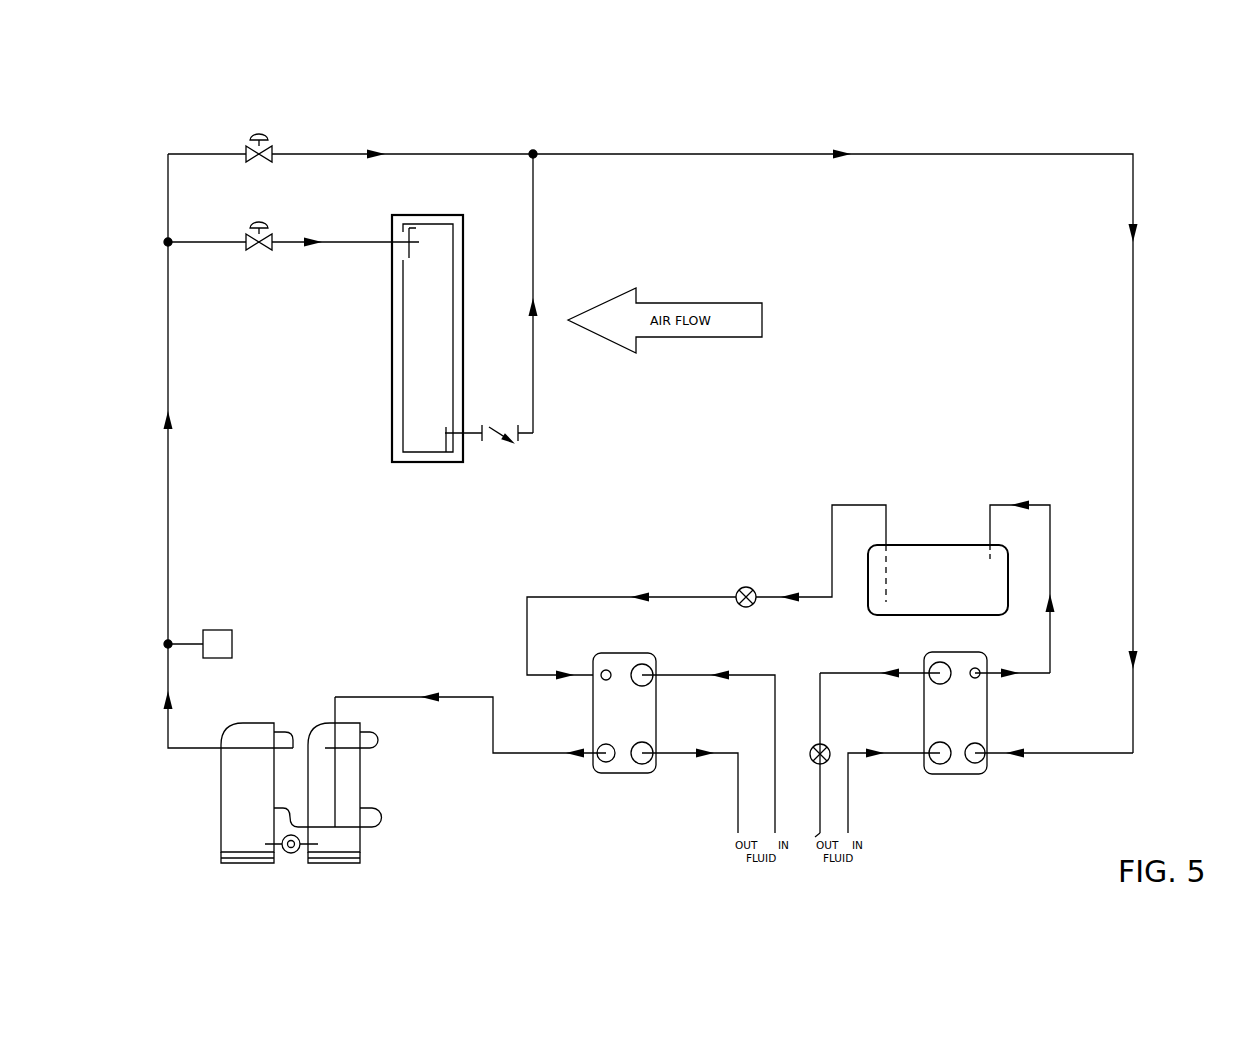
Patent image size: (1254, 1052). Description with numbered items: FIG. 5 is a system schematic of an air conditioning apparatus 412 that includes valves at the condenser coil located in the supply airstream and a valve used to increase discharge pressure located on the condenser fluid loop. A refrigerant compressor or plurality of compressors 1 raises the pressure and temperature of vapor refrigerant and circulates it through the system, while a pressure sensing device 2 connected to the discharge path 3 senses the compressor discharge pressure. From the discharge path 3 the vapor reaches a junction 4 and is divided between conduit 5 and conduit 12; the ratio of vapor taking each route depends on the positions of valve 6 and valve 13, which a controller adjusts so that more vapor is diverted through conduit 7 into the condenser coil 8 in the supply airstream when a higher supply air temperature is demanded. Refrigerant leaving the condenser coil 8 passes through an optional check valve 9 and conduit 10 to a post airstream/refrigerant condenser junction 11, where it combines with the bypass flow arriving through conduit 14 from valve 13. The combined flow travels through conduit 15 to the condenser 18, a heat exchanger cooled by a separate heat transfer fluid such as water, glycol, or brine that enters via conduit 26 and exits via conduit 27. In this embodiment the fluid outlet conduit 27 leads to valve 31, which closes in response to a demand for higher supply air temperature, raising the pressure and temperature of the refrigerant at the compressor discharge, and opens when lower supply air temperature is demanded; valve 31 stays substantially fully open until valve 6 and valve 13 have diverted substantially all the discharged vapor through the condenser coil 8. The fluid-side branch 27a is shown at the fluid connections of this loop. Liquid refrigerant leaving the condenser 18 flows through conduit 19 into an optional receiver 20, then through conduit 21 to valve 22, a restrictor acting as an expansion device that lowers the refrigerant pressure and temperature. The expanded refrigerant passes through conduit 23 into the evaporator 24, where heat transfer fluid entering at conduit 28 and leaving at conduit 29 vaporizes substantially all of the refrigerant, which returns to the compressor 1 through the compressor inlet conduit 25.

The apparatus 412 is at (1160, 102).
The compressor 1 is at (243, 714).
The pressure sensing device 2 is at (223, 623).
The discharge path 3 is at (178, 377).
The junction 4 is at (158, 233).
The conduit 5 is at (200, 233).
The valve 6 is at (287, 258).
The conduit 7 is at (366, 232).
The condenser coil 8 is at (442, 207).
The check valve 9 is at (507, 458).
The conduit 10 is at (544, 251).
The junction 11 is at (546, 143).
The conduit 12 is at (200, 147).
The valve 13 is at (282, 135).
The conduit 14 is at (430, 146).
The conduit 15 is at (968, 146).
The condenser 18 is at (996, 728).
The conduit 19 is at (1050, 494).
The receiver 20 is at (934, 535).
The conduit 21 is at (868, 494).
The valve 22 is at (759, 581).
The conduit 23 is at (570, 590).
The evaporator 24 is at (666, 728).
The compressor inlet conduit 25 is at (396, 708).
The conduit 26 is at (858, 804).
The conduit 27 is at (856, 663).
The fluid line 27a is at (808, 843).
The conduit 28 is at (677, 666).
The conduit 29 is at (732, 810).
The valve 31 is at (806, 736).